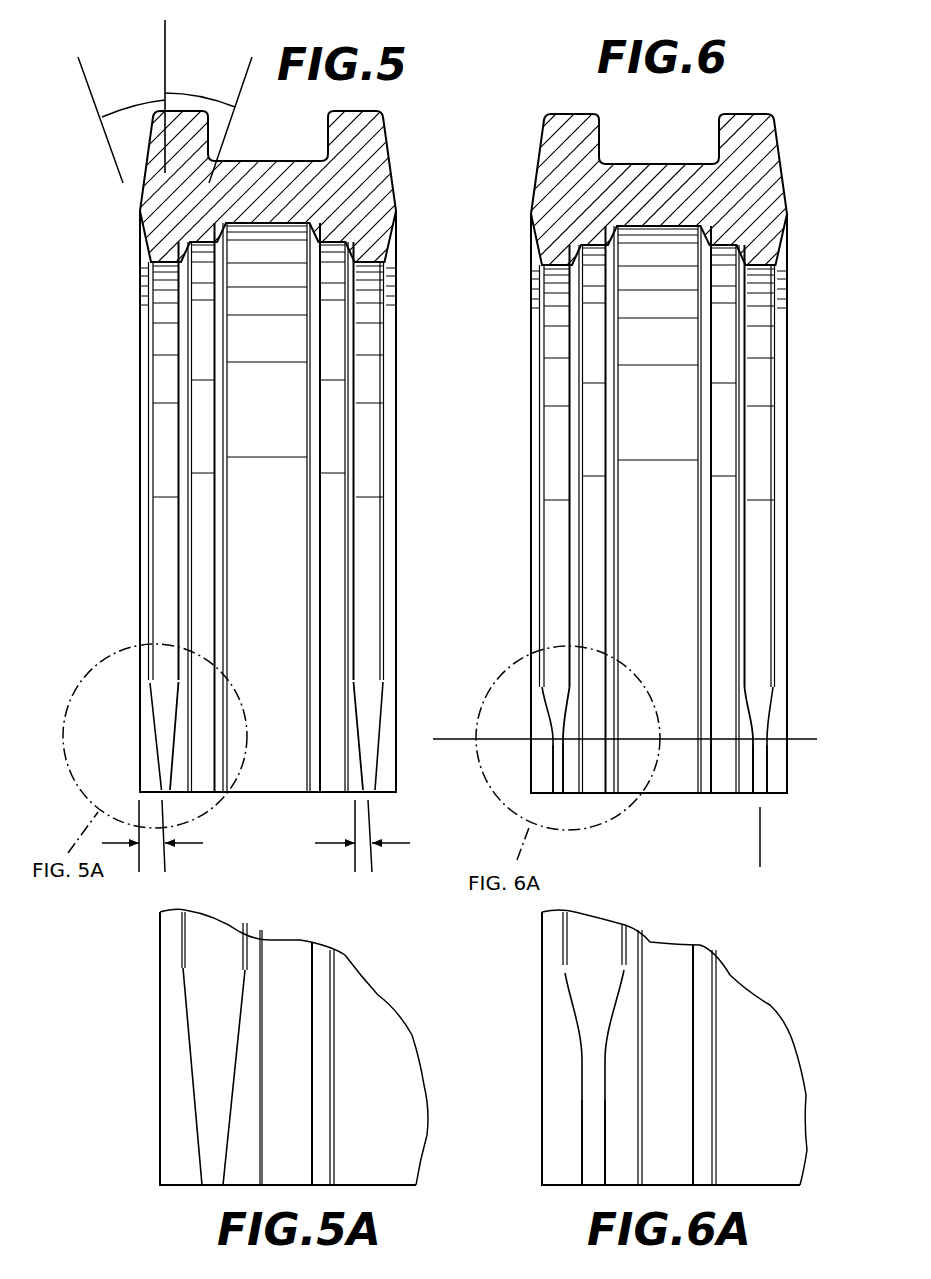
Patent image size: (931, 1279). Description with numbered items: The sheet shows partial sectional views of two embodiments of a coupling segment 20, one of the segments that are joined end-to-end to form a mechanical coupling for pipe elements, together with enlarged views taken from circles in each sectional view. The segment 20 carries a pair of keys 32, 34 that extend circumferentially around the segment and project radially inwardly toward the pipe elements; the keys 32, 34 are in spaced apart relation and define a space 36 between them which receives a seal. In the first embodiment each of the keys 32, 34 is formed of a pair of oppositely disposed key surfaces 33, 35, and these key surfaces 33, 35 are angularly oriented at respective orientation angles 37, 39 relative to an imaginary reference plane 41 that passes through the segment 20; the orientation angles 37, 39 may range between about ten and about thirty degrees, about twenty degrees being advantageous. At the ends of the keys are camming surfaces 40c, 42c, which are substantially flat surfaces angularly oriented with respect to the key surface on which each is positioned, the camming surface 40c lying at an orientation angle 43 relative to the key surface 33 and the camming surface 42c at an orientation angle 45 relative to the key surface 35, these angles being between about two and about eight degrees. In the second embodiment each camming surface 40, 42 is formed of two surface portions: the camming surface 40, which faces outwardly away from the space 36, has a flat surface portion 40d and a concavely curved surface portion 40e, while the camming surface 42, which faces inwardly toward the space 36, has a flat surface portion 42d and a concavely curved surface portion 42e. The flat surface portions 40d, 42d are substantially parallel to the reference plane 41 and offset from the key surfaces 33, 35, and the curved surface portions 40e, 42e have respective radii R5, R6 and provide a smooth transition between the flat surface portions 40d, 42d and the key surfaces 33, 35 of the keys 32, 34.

In FIG. 5, the segment 20 is at (396, 300).
In FIG. 6, the segment 20 is at (787, 325).
In FIG. 5A, the segment 20 is at (160, 975).
In FIG. 6A, the segment 20 is at (542, 963).
In FIG. 5, the key 32 is at (162, 523).
In FIG. 6, the key 32 is at (553, 568).
In FIG. 5, the key surface 33 is at (143, 302).
In FIG. 6, the key surface 33 is at (535, 375).
In FIG. 5, the key 34 is at (373, 442).
In FIG. 6, the key 34 is at (763, 430).
In FIG. 5, the key surface 35 is at (183, 312).
In FIG. 6, the key surface 35 is at (577, 315).
In FIG. 5, the space 36 is at (282, 558).
In FIG. 6, the space 36 is at (677, 565).
In FIG. 5, the orientation angle 37 is at (133, 102).
In FIG. 5, the orientation angle 39 is at (203, 90).
In FIG. 6, the camming surface 40 is at (803, 652).
In FIG. 5, the camming surface 40c is at (157, 750).
In FIG. 5A, the camming surface 40c is at (193, 1082).
In FIG. 6, the flat surface portion 40d is at (757, 763).
In FIG. 6A, the flat surface portion 40d is at (583, 1125).
In FIG. 6, the concavely curved surface portion 40e is at (768, 718).
In FIG. 6A, the concavely curved surface portion 40e is at (573, 1013).
In FIG. 5, the reference plane 41 is at (165, 27).
In FIG. 6, the reference plane 41 is at (760, 840).
In FIG. 6, the camming surface 42 is at (727, 753).
In FIG. 6A, the camming surface 42 is at (615, 1088).
In FIG. 5, the camming surface 42c is at (362, 772).
In FIG. 5A, the camming surface 42c is at (230, 1093).
In FIG. 6, the flat surface portion 42d is at (735, 777).
In FIG. 6A, the flat surface portion 42d is at (605, 1133).
In FIG. 6, the concavely curved surface portion 42e is at (746, 710).
In FIG. 6A, the concavely curved surface portion 42e is at (612, 1008).
In FIG. 5, the orientation angle 43 is at (150, 850).
In FIG. 5, the orientation angle 45 is at (363, 860).
In FIG. 6, the radius R5 is at (433, 739).
In FIG. 6, the radius R6 is at (677, 739).